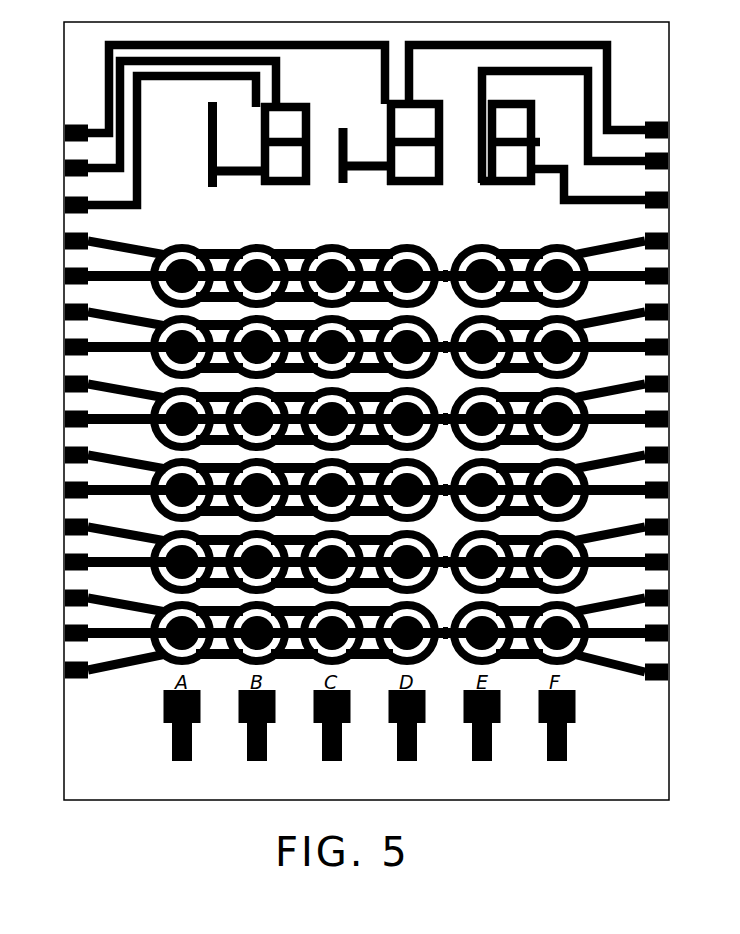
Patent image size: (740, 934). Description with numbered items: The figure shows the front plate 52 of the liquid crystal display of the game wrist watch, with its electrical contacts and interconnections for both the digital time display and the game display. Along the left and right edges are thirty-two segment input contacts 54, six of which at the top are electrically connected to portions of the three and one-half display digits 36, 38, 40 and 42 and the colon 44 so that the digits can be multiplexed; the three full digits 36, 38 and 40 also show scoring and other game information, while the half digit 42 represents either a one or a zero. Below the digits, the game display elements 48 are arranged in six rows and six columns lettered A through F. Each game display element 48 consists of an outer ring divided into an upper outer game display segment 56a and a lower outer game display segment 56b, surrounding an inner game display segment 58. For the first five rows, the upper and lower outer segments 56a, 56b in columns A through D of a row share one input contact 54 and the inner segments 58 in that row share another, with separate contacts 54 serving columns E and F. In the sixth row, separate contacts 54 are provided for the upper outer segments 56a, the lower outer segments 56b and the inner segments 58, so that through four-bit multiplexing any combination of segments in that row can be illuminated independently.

The segment input contacts 54 is at (65, 133).
The display digit 42 is at (203, 130).
The display digit 40 is at (273, 192).
The colon 44 is at (345, 126).
The display digit 38 is at (436, 99).
The display digit 36 is at (489, 190).
The front plate 52 is at (366, 477).
The game display elements 48 is at (443, 246).
The upper outer game display segments 56a is at (233, 255).
The lower outer game display segments 56b is at (236, 303).
The inner game display segments 58 is at (322, 257).